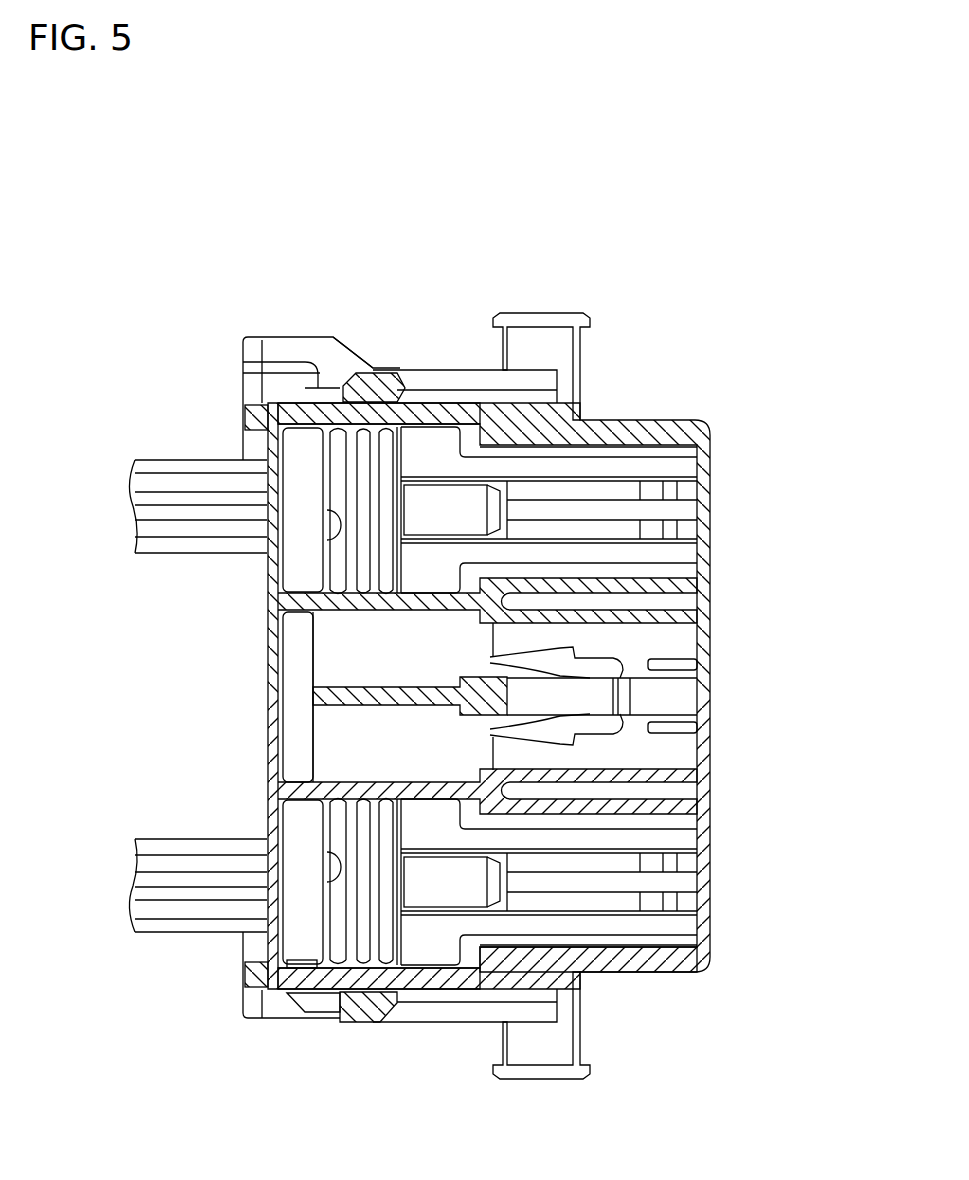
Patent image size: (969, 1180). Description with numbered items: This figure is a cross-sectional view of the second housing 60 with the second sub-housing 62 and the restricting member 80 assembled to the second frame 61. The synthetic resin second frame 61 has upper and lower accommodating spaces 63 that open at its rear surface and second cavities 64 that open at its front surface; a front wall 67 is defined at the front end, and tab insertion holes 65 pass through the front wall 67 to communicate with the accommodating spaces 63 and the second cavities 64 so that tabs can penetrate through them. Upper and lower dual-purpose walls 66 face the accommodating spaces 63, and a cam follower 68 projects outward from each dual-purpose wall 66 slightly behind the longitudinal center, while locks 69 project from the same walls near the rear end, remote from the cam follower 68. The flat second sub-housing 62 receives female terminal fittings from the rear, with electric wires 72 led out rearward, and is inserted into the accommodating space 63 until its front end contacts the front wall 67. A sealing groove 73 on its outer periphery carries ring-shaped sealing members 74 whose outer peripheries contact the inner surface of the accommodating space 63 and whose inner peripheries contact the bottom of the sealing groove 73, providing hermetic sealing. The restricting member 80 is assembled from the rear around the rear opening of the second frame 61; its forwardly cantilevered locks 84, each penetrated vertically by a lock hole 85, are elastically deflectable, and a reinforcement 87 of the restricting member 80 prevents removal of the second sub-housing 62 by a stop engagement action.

The second housing 60 is at (717, 294).
The second frame 61 is at (665, 420).
The second sub-housing 62 is at (432, 447).
The accommodating space 63 is at (277, 450).
The second cavity 64 is at (650, 623).
The tab insertion hole 65 is at (712, 488).
The dual-purpose wall 66 is at (408, 410).
The front wall 67 is at (710, 812).
The cam follower 68 is at (549, 312).
The lock 69 is at (313, 388).
The electric wire 72 is at (160, 480).
The sealing groove 73 is at (337, 527).
The sealing member 74 is at (360, 553).
The restricting member 80 is at (248, 418).
The lock 84 is at (373, 378).
The lock hole 85 is at (316, 380).
The reinforcement 87 is at (257, 1000).